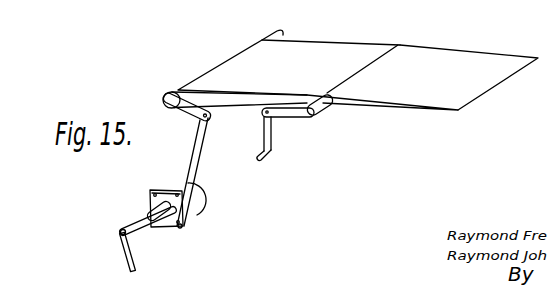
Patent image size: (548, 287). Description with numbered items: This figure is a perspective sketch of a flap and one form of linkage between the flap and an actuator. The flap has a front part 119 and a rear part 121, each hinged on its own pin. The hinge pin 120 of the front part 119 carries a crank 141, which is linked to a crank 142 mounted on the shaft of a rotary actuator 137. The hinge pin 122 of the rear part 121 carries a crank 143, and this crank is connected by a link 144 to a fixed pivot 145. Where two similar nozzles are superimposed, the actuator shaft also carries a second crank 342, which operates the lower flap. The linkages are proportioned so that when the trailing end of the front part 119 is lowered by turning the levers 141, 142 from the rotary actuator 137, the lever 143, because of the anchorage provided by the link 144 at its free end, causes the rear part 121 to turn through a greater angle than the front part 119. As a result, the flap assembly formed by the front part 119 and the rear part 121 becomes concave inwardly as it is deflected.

The front part 119 is at (340, 48).
The hinge pin 120 is at (283, 37).
The rear part 121 is at (434, 57).
The hinge pin 122 is at (320, 114).
The rotary actuator 137 is at (195, 203).
The crank 141 is at (179, 112).
The crank 142 is at (172, 227).
The crank 143 is at (295, 117).
The link 144 is at (264, 138).
The fixed pivot 145 is at (259, 158).
The second crank 342 is at (134, 223).